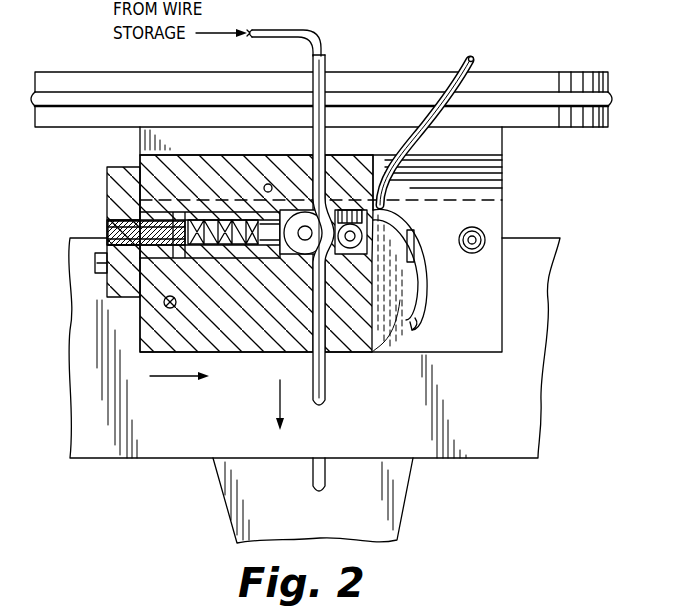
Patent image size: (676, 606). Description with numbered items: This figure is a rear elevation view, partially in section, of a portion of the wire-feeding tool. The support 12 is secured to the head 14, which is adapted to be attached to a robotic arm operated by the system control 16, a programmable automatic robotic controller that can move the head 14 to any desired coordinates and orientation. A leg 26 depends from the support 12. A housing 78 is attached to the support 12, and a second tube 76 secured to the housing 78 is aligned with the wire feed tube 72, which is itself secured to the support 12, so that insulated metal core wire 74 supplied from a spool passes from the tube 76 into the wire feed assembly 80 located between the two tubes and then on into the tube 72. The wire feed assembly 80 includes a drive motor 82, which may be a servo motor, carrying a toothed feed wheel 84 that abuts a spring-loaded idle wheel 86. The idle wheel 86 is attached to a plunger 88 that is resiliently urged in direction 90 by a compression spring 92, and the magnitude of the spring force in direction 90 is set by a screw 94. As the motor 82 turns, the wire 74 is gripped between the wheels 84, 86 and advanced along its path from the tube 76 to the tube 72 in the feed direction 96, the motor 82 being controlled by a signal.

The support 12 is at (564, 284).
The head 14 is at (517, 146).
The system control 16 is at (543, 12).
The leg 26 is at (418, 479).
The wire feed tube 72 is at (337, 400).
The insulated metal core wire 74 is at (312, 29).
The second tube 76 is at (325, 59).
The housing 78 is at (509, 274).
The wire feed assembly 80 is at (91, 209).
The drive motor 82 is at (437, 290).
The toothed feed wheel 84 is at (352, 250).
The idle wheel 86 is at (306, 254).
The plunger 88 is at (262, 260).
The direction 90 is at (165, 378).
The compression spring 92 is at (213, 251).
The screw 94 is at (158, 249).
The feed direction 96 is at (279, 404).